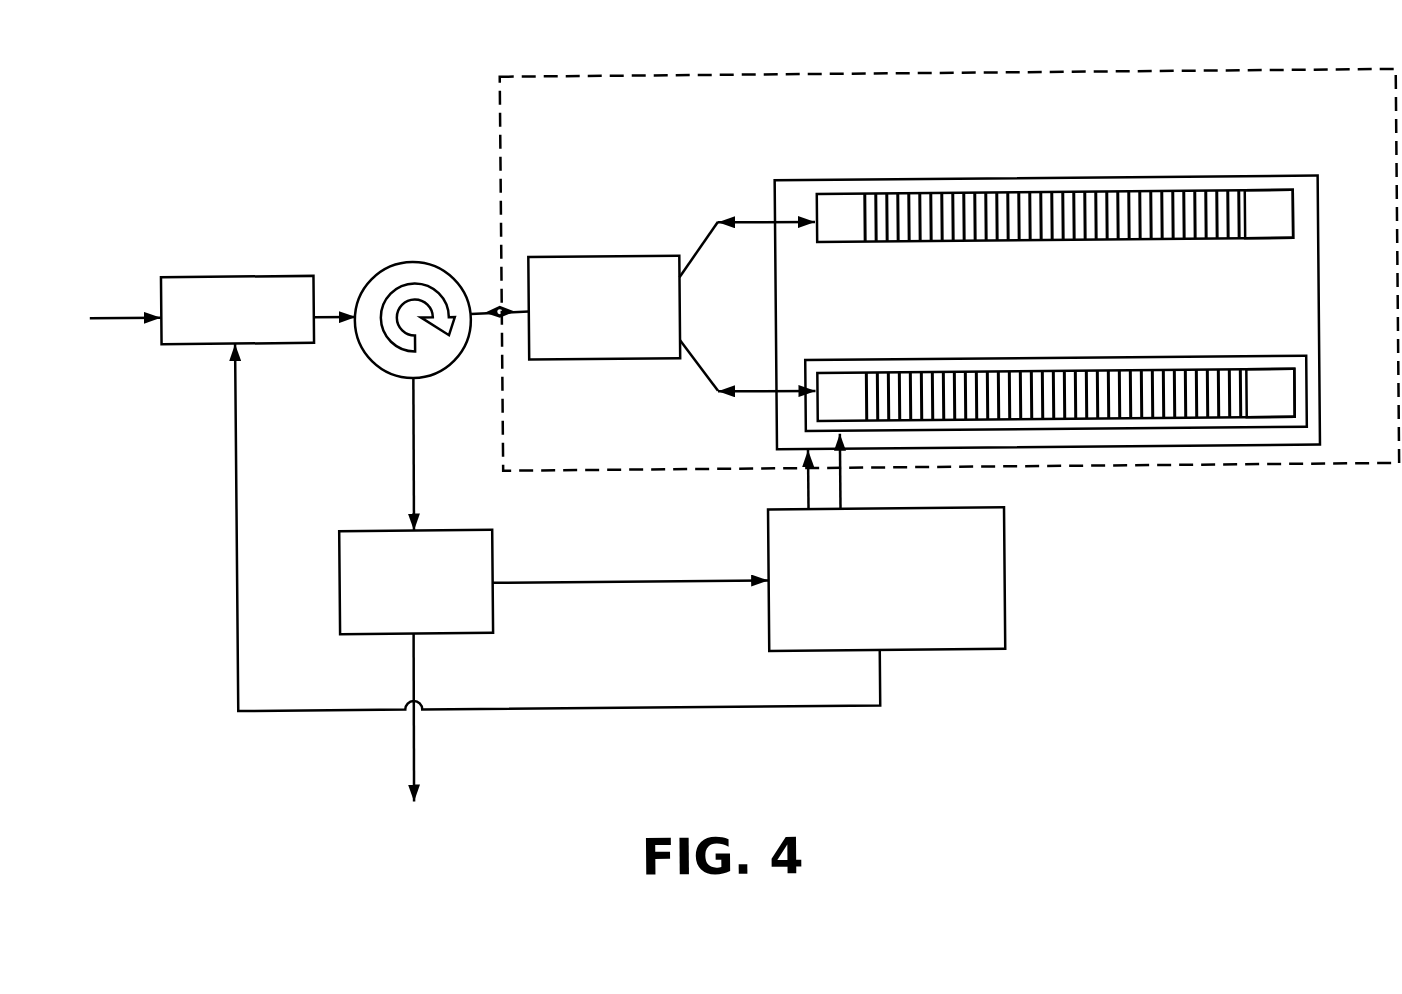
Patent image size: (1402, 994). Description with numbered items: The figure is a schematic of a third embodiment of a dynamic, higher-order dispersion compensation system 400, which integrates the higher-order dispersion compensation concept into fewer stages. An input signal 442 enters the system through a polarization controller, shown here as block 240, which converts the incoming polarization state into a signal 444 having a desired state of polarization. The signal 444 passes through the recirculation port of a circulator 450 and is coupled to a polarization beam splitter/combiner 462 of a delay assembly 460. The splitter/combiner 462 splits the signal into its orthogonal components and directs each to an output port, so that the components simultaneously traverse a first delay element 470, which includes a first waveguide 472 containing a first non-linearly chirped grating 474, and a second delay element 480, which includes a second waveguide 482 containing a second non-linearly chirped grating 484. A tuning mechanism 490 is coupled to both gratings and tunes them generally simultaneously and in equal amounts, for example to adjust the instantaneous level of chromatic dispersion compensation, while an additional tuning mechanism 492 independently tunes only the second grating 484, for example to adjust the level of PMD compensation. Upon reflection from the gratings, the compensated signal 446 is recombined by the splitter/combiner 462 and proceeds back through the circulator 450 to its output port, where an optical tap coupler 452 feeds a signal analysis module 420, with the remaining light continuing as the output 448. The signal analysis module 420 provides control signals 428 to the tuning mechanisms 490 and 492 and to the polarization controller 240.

The compensation system 400 is at (256, 114).
The optical source / transmitter 240 is at (265, 323).
The input signal 442 is at (113, 309).
The signal with a desired state of polarization 444 is at (319, 300).
The circulator 450 is at (415, 260).
The compensated signal 446 is at (412, 435).
The output signal 448 is at (410, 740).
The optical tap coupler 452 is at (441, 596).
The signal analysis module 420 is at (908, 598).
The control signals 428 is at (588, 706).
The delay assembly 460 is at (1136, 71).
The polarization beam splitter/combiner 462 is at (631, 322).
The first delay element 470 is at (1083, 174).
The first waveguide 472 is at (1264, 210).
The first non-linearly chirped grating 474 is at (1005, 203).
The tuning mechanism 490 is at (1162, 181).
The second delay element 480 is at (1061, 348).
The second waveguide 482 is at (1266, 383).
The second non-linearly chirped grating 484 is at (1028, 383).
The additional tuning mechanism 492 is at (1141, 359).